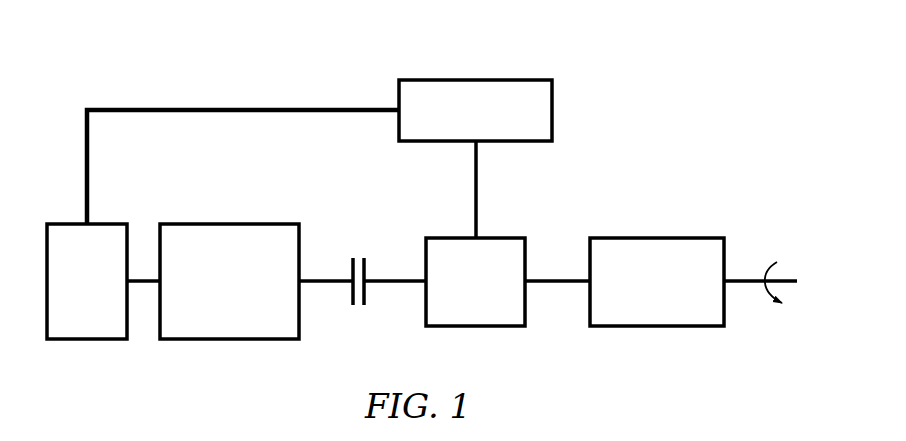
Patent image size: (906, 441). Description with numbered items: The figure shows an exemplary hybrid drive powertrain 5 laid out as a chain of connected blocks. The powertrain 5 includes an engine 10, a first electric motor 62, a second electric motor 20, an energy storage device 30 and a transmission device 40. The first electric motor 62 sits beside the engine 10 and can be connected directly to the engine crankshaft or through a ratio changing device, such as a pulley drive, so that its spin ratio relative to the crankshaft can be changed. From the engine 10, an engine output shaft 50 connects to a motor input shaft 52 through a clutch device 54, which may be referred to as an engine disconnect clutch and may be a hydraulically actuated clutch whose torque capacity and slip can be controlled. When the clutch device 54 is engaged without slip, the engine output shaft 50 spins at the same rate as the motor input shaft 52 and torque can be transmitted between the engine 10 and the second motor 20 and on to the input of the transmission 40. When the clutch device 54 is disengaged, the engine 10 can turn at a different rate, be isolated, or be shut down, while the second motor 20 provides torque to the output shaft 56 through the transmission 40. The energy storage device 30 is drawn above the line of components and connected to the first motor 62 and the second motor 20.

The powertrain 5 is at (108, 63).
The first electric motor 62 is at (70, 220).
The engine 10 is at (240, 220).
The engine output shaft 50 is at (330, 275).
The clutch device 54 is at (359, 253).
The motor input shaft 52 is at (389, 275).
The energy storage device 30 is at (556, 103).
The second electric motor 20 is at (530, 252).
The transmission device 40 is at (683, 232).
The output shaft 56 is at (737, 275).